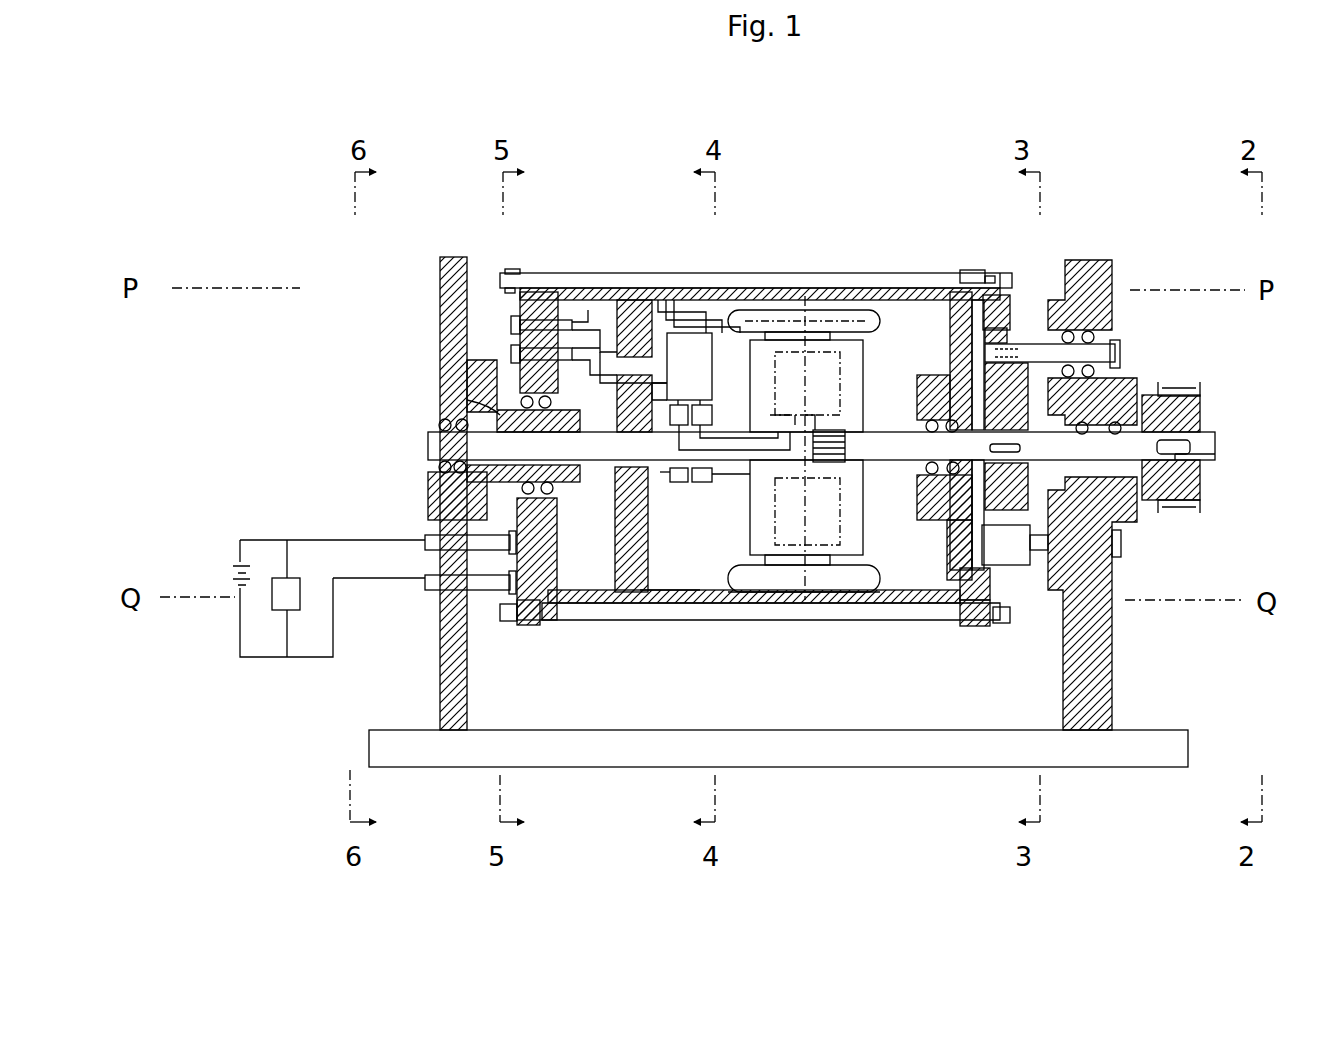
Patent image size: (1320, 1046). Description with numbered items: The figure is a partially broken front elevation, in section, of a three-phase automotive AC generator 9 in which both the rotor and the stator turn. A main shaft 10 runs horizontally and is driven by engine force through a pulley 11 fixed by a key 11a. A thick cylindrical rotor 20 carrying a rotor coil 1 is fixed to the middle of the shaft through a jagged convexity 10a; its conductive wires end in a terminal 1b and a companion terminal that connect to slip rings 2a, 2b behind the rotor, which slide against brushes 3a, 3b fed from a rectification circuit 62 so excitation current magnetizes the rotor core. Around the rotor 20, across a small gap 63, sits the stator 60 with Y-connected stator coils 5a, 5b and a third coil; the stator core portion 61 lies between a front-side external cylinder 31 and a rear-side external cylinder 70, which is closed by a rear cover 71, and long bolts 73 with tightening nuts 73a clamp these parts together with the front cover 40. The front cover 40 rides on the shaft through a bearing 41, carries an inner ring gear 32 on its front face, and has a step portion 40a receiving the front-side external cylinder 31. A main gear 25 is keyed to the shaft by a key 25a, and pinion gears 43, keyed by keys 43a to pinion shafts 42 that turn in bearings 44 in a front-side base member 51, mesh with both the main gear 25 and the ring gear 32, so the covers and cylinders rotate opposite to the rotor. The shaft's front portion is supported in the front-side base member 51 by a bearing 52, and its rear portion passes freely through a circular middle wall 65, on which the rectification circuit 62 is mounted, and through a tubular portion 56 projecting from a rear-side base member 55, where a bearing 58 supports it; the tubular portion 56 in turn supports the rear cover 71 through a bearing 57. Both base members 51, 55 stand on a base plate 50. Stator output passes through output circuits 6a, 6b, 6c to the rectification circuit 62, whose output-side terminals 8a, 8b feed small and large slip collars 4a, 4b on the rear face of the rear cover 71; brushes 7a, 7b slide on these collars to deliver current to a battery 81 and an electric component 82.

The rotor coil 1 is at (840, 380).
The terminal 1b is at (784, 418).
The slip ring 2a is at (677, 482).
The slip ring 2b is at (700, 482).
The brush 3a is at (722, 425).
The brush 3b is at (712, 412).
The slip collar 4a is at (520, 325).
The slip collar 4b is at (520, 354).
The stator coil 5a is at (862, 320).
The stator coil 5b is at (862, 582).
The output circuit 6a is at (665, 318).
The output circuit 6b is at (688, 322).
The output circuit 6c is at (705, 330).
The brush 7a is at (425, 588).
The brush 7b is at (425, 540).
The output-side terminal 8a is at (594, 329).
The output-side terminal 8b is at (617, 365).
The generator 9 is at (808, 228).
The main shaft 10 is at (1216, 446).
The jagged convexity 10a is at (845, 450).
The pulley 11 is at (1175, 510).
The key 11a is at (1212, 462).
The rotor 20 is at (812, 595).
The main gear 25 is at (1020, 492).
The key 25a is at (1028, 420).
The front-side external cylinder 31 is at (908, 302).
The ring gear 32 is at (975, 296).
The front cover 40 is at (968, 270).
The step portion 40a is at (953, 560).
The bearing 41 is at (926, 469).
The pinion shaft 42 is at (1120, 352).
The pinion gear 43 is at (1005, 330).
The key 43a is at (1074, 406).
The bearing 44 is at (1097, 320).
The base plate 50 is at (848, 767).
The front-side base member 51 is at (1112, 690).
The bearing 52 is at (1121, 545).
The rear-side base member 55 is at (447, 702).
The tubular portion 56 is at (498, 412).
The bearing 57 is at (552, 402).
The bearing 58 is at (438, 425).
The stator 60 is at (812, 308).
The stator core portion 61 is at (778, 603).
The rectification circuit 62 is at (700, 372).
The gap 63 is at (765, 336).
The middle wall 65 is at (648, 556).
The rear-side external cylinder 70 is at (628, 298).
The rear cover 71 is at (538, 272).
The long bolt 73 is at (882, 273).
The tightening nut 73a is at (508, 268).
The battery 81 is at (236, 560).
The electric component 82 is at (296, 600).